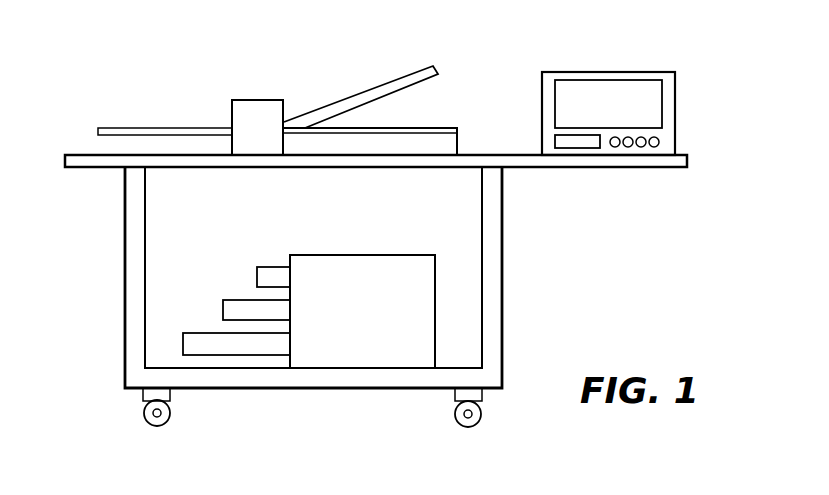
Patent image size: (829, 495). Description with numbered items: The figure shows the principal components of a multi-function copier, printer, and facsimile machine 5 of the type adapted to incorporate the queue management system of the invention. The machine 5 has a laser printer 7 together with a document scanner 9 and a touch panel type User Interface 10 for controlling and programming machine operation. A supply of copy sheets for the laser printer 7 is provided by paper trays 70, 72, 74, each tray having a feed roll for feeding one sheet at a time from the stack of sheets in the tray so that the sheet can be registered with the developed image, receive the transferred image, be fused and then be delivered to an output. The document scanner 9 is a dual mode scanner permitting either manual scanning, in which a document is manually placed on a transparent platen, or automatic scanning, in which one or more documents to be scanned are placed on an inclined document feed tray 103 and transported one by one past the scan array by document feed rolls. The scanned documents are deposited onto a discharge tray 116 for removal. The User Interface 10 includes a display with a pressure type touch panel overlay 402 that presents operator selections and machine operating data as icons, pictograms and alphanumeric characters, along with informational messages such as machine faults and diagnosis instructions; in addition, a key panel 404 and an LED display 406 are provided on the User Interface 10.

The multi-function copier, printer, and facsimile machine 5 is at (528, 225).
The laser printer 7 is at (372, 255).
The document scanner 9 is at (249, 91).
The touch panel type User Interface (UI) 10 is at (605, 67).
The paper tray 70 is at (255, 272).
The paper tray 72 is at (222, 305).
The paper tray 74 is at (183, 335).
The inclined document feed tray 103 is at (403, 90).
The discharge tray 116 is at (157, 127).
The pressure type touch panel overlay 402 is at (637, 95).
The key panel 404 is at (660, 142).
The LED display 406 is at (555, 142).